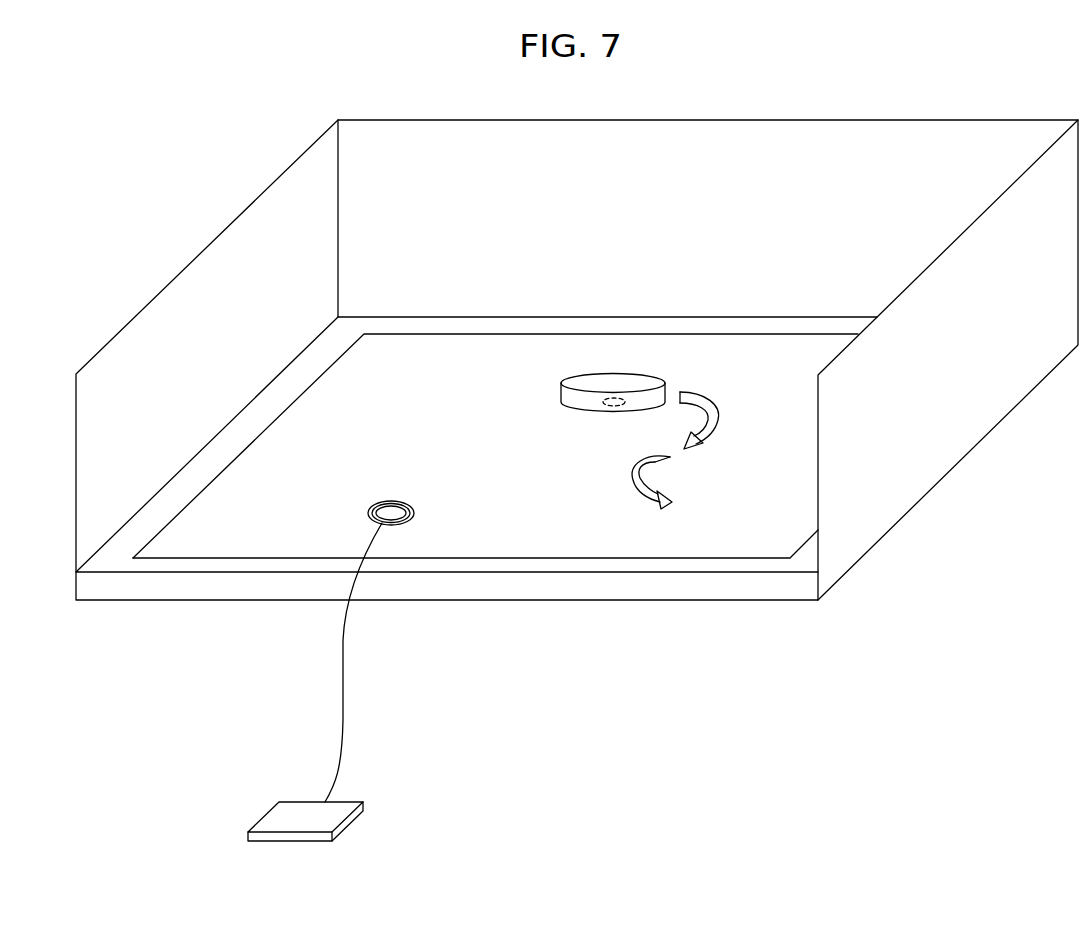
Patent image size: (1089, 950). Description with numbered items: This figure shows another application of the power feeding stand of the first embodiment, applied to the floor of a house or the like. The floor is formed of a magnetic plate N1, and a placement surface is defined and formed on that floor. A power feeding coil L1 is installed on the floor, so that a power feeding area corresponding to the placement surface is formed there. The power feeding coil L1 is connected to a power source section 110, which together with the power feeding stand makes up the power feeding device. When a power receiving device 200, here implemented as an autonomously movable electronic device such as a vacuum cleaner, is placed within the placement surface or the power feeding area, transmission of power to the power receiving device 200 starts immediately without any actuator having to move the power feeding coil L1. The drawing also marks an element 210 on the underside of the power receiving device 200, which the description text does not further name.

The magnetic plate N1 is at (732, 600).
The power receiving device 200 is at (645, 383).
The tag 210 is at (608, 407).
The power feeding coil L1 is at (415, 513).
The power source section 110 is at (340, 807).